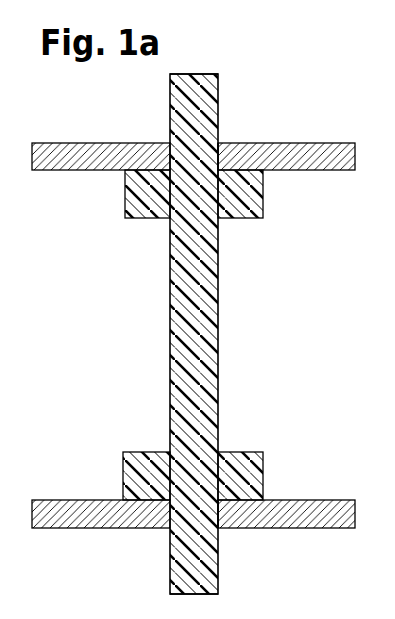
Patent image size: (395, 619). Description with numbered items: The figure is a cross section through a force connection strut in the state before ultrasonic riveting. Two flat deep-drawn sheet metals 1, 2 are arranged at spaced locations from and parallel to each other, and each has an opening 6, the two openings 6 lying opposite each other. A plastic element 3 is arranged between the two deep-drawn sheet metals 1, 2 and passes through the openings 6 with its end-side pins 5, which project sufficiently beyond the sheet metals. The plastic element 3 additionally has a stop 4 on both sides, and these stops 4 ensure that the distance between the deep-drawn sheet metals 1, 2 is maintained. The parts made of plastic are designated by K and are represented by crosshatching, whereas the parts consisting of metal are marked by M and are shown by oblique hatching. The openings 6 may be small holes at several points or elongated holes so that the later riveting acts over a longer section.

The deep-drawn sheet metal 1 is at (92, 172).
The deep-drawn sheet metal 2 is at (112, 530).
The plastic element 3 is at (231, 351).
The stop 4 is at (268, 228).
The end-side pin 5 is at (159, 100).
The opening 6 is at (229, 146).
The plastic part designation K is at (184, 328).
The metal part designation M is at (310, 172).